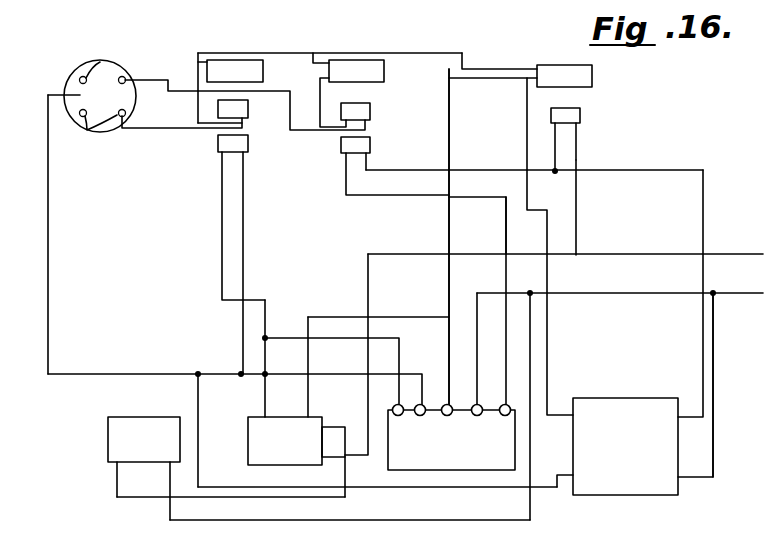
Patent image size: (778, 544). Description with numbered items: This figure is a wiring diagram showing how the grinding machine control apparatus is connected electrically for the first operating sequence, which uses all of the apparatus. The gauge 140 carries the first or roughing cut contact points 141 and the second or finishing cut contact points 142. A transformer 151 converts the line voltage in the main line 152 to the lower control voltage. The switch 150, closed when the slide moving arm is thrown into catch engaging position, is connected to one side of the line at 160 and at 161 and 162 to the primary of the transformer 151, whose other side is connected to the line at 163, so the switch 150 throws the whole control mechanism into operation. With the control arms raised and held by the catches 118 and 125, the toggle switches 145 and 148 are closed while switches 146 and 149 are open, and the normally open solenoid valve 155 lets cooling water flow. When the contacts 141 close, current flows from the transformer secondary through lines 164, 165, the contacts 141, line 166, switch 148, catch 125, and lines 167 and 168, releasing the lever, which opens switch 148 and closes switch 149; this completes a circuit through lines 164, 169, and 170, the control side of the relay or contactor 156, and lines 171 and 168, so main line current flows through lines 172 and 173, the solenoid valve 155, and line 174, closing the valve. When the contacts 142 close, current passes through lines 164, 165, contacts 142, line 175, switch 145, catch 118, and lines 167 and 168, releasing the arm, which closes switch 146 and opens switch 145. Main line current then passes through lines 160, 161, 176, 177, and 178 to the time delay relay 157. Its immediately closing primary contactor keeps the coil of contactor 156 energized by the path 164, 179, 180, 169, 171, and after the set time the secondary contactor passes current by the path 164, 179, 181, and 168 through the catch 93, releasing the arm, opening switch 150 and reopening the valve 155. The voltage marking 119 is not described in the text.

The catch 93 is at (592, 74).
The catch 118 is at (384, 71).
The indicator 119 is at (335, 442).
The catch 125 is at (263, 71).
The gauge 140 is at (84, 63).
The first or roughing cut contact points 141 is at (87, 132).
The second or finishing cut contact points 142 is at (100, 60).
The toggle switch 145 is at (370, 111).
The toggle switch 146 is at (370, 145).
The toggle switch 148 is at (248, 108).
The toggle switch 149 is at (248, 143).
The switch 150 is at (580, 115).
The transformer 151 is at (648, 496).
The line 152 is at (730, 256).
The solenoid valve 155 is at (161, 416).
The relay or contactor 156 is at (248, 446).
The time delay relay 157 is at (451, 438).
The line 160 is at (578, 207).
The line 161 is at (580, 145).
The line 162 is at (654, 168).
The line 163 is at (716, 388).
The line 164 is at (424, 490).
The line 165 is at (50, 283).
The line 166 is at (162, 128).
The line 167 is at (306, 54).
The line 168 is at (525, 100).
The line 169 is at (219, 246).
The line 170 is at (245, 240).
The line 171 is at (340, 317).
The line 172 is at (415, 254).
The line 173 is at (236, 500).
The line 174 is at (406, 523).
The line 175 is at (161, 97).
The line 176 is at (504, 168).
The line 177 is at (474, 199).
The line 178 is at (483, 345).
The line 179 is at (353, 374).
The line 180 is at (389, 338).
The line 181 is at (447, 213).